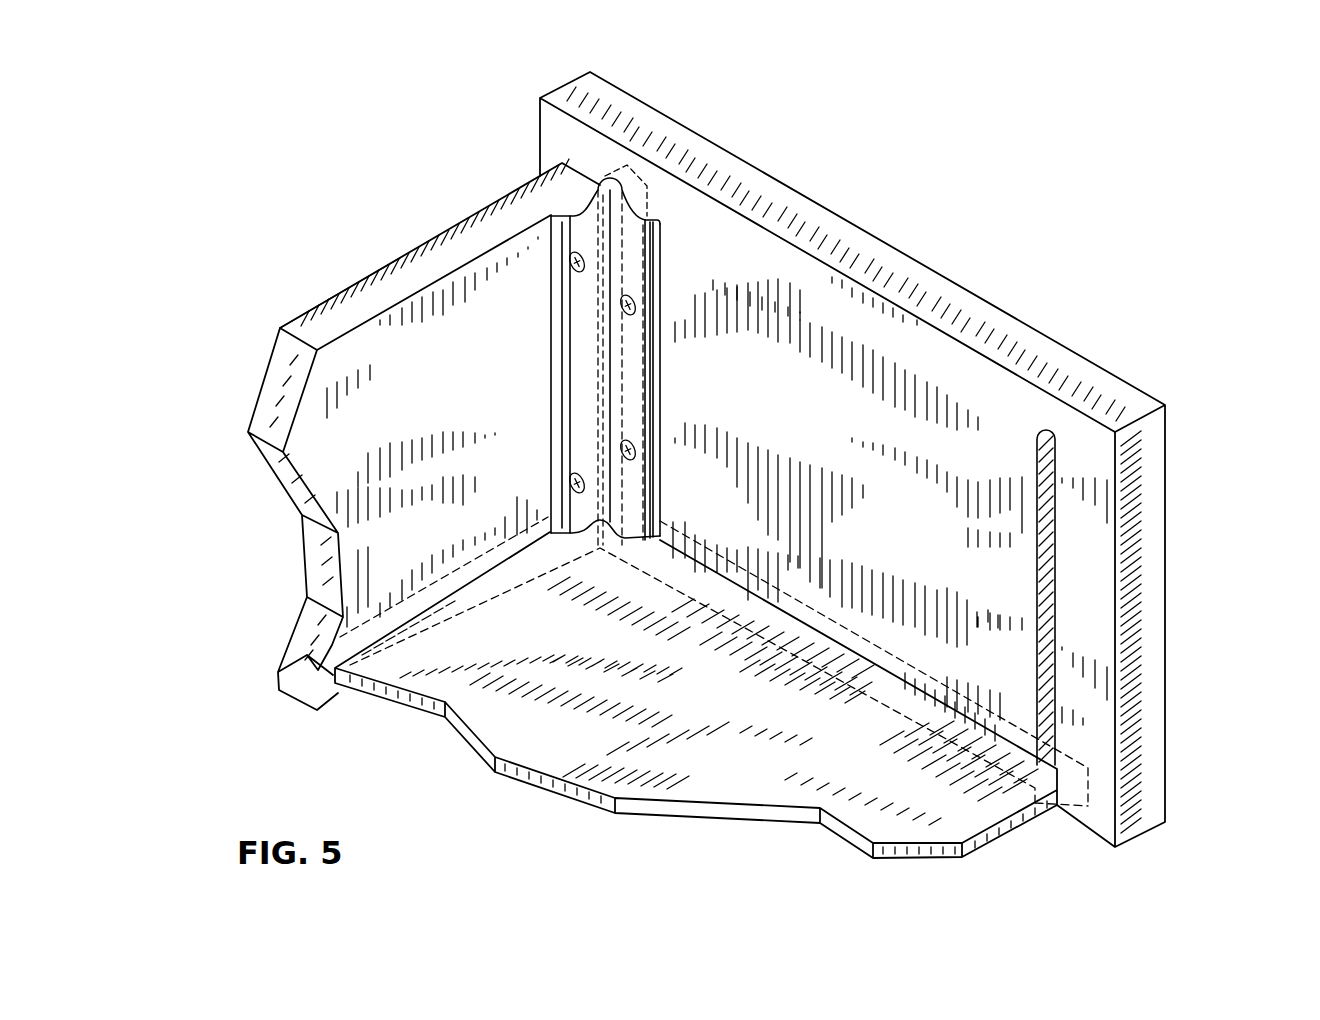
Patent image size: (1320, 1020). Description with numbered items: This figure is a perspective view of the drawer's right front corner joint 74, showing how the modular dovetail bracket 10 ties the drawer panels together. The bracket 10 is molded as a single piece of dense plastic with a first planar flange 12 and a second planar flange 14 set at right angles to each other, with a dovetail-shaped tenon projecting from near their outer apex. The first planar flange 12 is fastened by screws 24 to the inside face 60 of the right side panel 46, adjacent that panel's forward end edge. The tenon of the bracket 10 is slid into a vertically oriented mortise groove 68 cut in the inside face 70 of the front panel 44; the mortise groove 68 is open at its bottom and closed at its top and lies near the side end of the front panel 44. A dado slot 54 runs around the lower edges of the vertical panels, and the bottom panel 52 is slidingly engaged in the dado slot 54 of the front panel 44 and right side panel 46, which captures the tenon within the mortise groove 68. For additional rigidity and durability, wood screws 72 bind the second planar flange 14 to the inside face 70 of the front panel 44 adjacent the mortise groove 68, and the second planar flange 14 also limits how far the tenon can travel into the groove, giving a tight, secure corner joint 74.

The modular dovetail bracket 10 is at (777, 465).
The first planar flange 12 is at (553, 362).
The second planar flange 14 is at (658, 362).
The screws 24 is at (572, 271).
The front panel 44 is at (1183, 566).
The right side panel 46 is at (258, 377).
The bottom panel 52 is at (720, 817).
The dado slot 54 is at (452, 606).
The inside face 60 is at (373, 338).
The mortise groove 68 is at (648, 188).
The inside face 70 is at (955, 362).
The wood screws 72 is at (635, 302).
The right front corner joint 74 is at (320, 165).